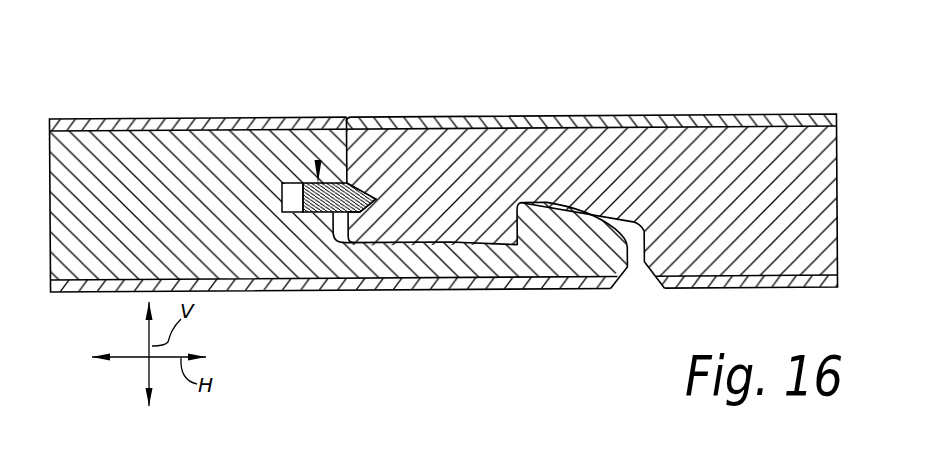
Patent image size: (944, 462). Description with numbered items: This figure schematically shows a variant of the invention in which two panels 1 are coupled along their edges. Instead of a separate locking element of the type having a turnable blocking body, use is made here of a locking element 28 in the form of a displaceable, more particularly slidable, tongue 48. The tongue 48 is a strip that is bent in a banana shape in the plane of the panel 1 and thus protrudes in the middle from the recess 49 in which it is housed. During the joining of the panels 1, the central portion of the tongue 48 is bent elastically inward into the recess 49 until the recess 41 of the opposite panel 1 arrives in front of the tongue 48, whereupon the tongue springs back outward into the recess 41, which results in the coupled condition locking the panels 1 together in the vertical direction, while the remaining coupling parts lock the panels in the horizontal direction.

The panel 1 is at (142, 173).
The separate locking element 28 is at (317, 162).
The recess 41 is at (372, 201).
The slidable tongue 48 is at (352, 186).
The recess 49 is at (296, 200).